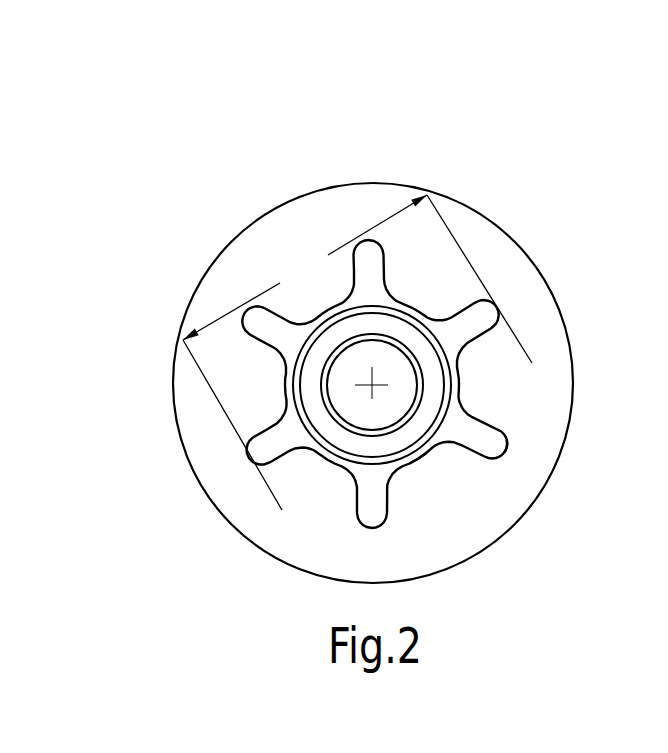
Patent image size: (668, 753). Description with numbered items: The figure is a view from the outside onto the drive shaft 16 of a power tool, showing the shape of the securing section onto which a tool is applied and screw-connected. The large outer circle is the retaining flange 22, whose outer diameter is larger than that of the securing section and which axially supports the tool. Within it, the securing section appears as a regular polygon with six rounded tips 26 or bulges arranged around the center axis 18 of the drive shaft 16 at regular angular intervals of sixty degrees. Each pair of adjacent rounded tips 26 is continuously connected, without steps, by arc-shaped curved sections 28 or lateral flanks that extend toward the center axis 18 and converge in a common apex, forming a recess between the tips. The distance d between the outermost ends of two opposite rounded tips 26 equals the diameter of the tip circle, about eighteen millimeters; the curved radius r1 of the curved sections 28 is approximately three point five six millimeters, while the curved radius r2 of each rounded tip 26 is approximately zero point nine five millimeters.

The drive shaft 16 is at (416, 176).
The retaining flange 22 is at (498, 252).
The rounded tips 26 is at (482, 317).
The curved sections 28 is at (470, 362).
The center axis 18 is at (371, 389).
The distance between opposite rounded tips d is at (357, 352).
The curved radius of curved sections r1 is at (413, 462).
The curved radius of rounded tip r2 is at (508, 453).